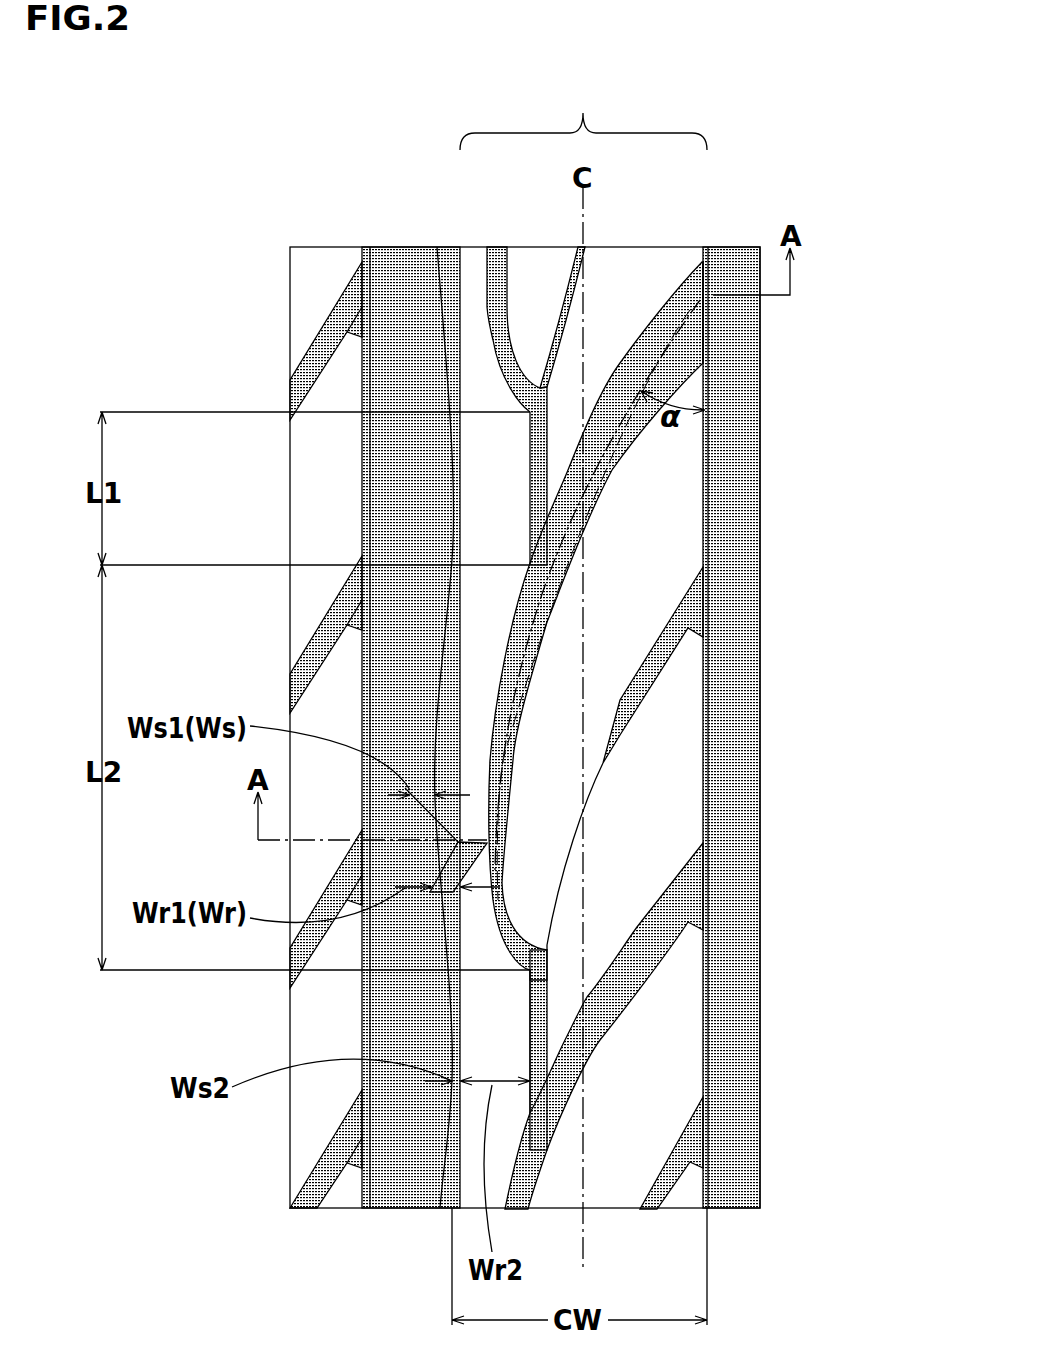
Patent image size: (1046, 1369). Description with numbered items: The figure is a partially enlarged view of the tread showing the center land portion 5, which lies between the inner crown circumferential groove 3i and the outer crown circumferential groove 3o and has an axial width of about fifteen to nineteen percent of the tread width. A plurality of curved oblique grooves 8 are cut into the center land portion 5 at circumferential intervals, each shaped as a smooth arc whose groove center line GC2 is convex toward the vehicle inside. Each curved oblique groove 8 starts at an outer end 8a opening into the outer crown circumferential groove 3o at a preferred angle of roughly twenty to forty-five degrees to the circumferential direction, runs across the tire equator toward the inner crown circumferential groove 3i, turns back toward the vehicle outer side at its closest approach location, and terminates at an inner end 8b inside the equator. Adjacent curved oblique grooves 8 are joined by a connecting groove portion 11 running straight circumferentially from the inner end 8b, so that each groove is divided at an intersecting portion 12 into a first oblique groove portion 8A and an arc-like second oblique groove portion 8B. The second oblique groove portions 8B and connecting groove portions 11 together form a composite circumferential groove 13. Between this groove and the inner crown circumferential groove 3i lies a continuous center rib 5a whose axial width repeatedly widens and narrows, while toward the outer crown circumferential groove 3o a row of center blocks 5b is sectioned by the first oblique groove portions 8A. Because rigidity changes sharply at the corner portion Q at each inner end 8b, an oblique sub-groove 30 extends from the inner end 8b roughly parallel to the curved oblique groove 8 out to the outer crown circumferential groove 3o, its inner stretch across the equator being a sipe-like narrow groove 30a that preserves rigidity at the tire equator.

The inner crown circumferential groove 3i is at (402, 282).
The outer crown circumferential groove 3o is at (728, 257).
The center land portion 5 is at (583, 116).
The center rib 5a is at (480, 360).
The center blocks 5b is at (640, 869).
The curved oblique groove 8 is at (607, 483).
The first oblique groove portion 8A is at (593, 1050).
The second oblique groove portion 8B is at (547, 622).
The outer end 8a is at (718, 281).
The inner end 8b is at (516, 989).
The connecting groove portion 11 is at (545, 1012).
The intersecting portion 12 is at (515, 560).
The composite circumferential groove 13 is at (508, 307).
The oblique sub-groove 30 is at (640, 698).
The sipe-like narrow groove 30a is at (590, 785).
The groove center line GC2 is at (610, 437).
The corner portion Q is at (565, 939).